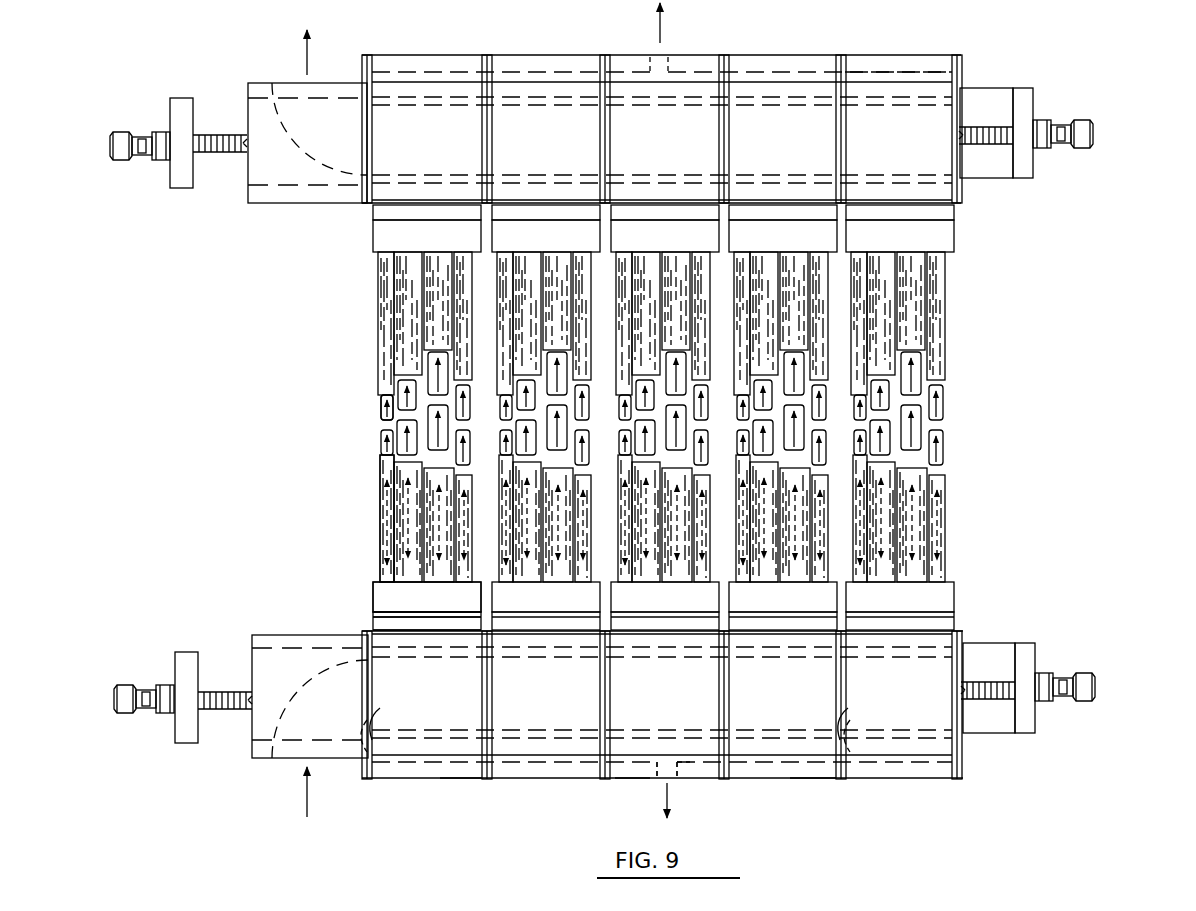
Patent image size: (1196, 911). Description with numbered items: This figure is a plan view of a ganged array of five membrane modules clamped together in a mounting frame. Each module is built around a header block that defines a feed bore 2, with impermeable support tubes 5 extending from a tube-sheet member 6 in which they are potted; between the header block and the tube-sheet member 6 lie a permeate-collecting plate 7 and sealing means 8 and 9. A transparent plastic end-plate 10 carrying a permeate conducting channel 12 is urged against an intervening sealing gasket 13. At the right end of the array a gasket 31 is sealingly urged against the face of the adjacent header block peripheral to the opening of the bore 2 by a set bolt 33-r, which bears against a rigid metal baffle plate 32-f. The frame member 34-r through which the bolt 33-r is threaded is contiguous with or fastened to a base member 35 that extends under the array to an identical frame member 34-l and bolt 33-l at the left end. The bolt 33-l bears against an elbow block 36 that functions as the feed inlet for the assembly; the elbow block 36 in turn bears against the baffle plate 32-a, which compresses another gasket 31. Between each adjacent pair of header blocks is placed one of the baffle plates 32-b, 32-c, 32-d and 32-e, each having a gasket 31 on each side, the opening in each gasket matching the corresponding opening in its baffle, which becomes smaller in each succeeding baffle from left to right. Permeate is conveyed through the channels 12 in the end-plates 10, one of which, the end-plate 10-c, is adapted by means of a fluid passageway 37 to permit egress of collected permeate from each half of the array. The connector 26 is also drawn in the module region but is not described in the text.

The feed bore 2 is at (932, 136).
The impermeable support tubes 5 is at (383, 463).
The tube-sheet member 6 is at (376, 580).
The permeate-collecting plate 7 is at (376, 618).
The sealing means 8 is at (376, 631).
The sealing means 9 is at (376, 610).
The end-plate 10 is at (808, 780).
The end-plate 10-c is at (638, 780).
The permeate conducting channel 12 is at (464, 772).
The sealing gasket 13 is at (907, 68).
The connector 26 is at (384, 418).
The gasket 31 is at (375, 724).
The baffle plate 32-a is at (598, 50).
The baffle plate 32-b is at (487, 780).
The baffle plate 32-c is at (607, 780).
The baffle plate 32-d is at (724, 780).
The baffle plate 32-e is at (842, 780).
The baffle plate 32-f is at (957, 50).
The set bolt 33-l is at (125, 683).
The set bolt 33-r is at (1085, 672).
The frame member 34-l is at (185, 650).
The frame member 34-r is at (1022, 643).
The base member 35 is at (1012, 737).
The elbow block 36 is at (262, 637).
The fluid passageway 37 is at (670, 773).